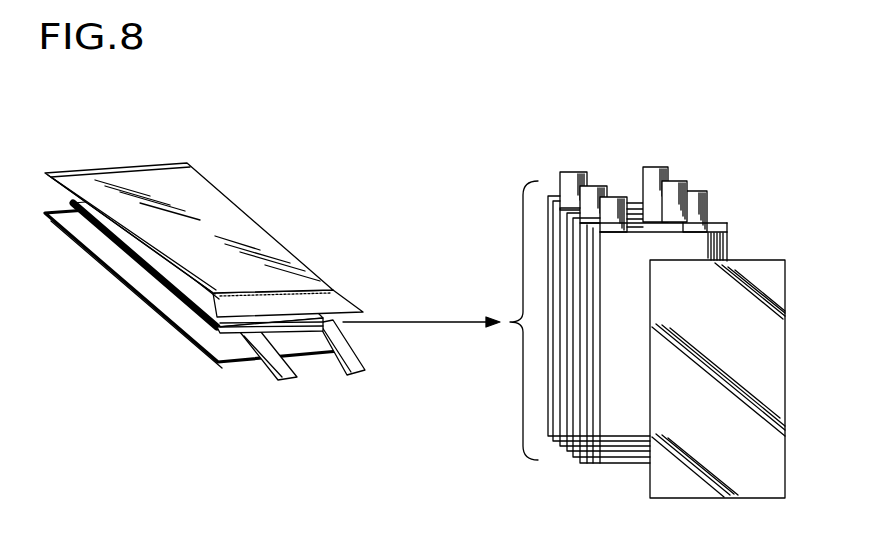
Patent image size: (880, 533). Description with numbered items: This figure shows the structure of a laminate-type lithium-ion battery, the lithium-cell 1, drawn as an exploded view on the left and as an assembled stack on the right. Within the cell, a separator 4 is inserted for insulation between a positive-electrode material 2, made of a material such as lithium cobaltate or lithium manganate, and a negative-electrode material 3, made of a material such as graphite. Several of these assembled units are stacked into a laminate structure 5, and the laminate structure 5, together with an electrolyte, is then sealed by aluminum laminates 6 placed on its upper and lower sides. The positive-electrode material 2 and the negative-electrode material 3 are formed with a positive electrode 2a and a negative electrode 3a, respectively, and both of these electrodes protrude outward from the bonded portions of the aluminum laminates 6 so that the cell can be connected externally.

The lithium-cell 1 is at (252, 185).
The positive-electrode material 2 is at (652, 217).
The positive electrode 2a is at (363, 360).
The negative-electrode material 3 is at (728, 227).
The negative electrode 3a is at (268, 369).
The separator 4 is at (765, 272).
The laminate structure 5 is at (100, 247).
The aluminum laminates 6 is at (297, 283).